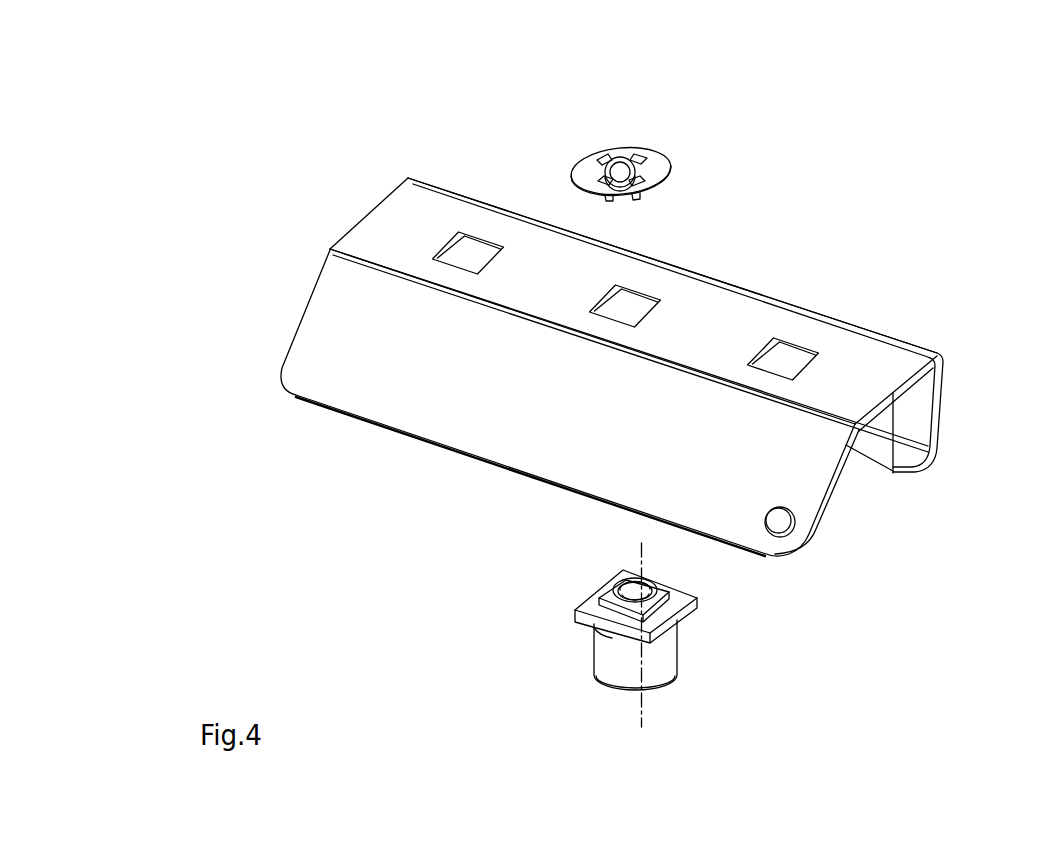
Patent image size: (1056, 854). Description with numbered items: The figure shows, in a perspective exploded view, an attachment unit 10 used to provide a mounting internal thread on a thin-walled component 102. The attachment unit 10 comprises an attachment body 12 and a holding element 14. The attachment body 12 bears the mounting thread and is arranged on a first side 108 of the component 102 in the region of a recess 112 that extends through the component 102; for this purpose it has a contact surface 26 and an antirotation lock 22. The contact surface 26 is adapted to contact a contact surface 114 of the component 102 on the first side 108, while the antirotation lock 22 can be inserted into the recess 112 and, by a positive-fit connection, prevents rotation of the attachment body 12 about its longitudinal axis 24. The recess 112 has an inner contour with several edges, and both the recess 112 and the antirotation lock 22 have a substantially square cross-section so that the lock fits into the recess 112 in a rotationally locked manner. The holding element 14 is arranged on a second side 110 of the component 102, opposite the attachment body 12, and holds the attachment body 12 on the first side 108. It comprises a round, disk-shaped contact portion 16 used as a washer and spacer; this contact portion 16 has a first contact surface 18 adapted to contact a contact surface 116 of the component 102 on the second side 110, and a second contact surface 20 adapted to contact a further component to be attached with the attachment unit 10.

The attachment unit 10 is at (845, 152).
The attachment body 12 is at (668, 648).
The holding element 14 is at (650, 127).
The contact portion 16 is at (657, 167).
The first contact surface 18 is at (650, 203).
The second contact surface 20 is at (580, 167).
The antirotation lock 22 is at (668, 580).
The longitudinal axis 24 is at (642, 715).
The contact surface 26 is at (588, 605).
The thin-walled component 102 is at (922, 402).
The first side 108 is at (862, 482).
The second side 110 is at (517, 198).
The recess 112 is at (630, 308).
The contact surface of component 114 is at (892, 475).
The contact surface of component 116 is at (873, 345).